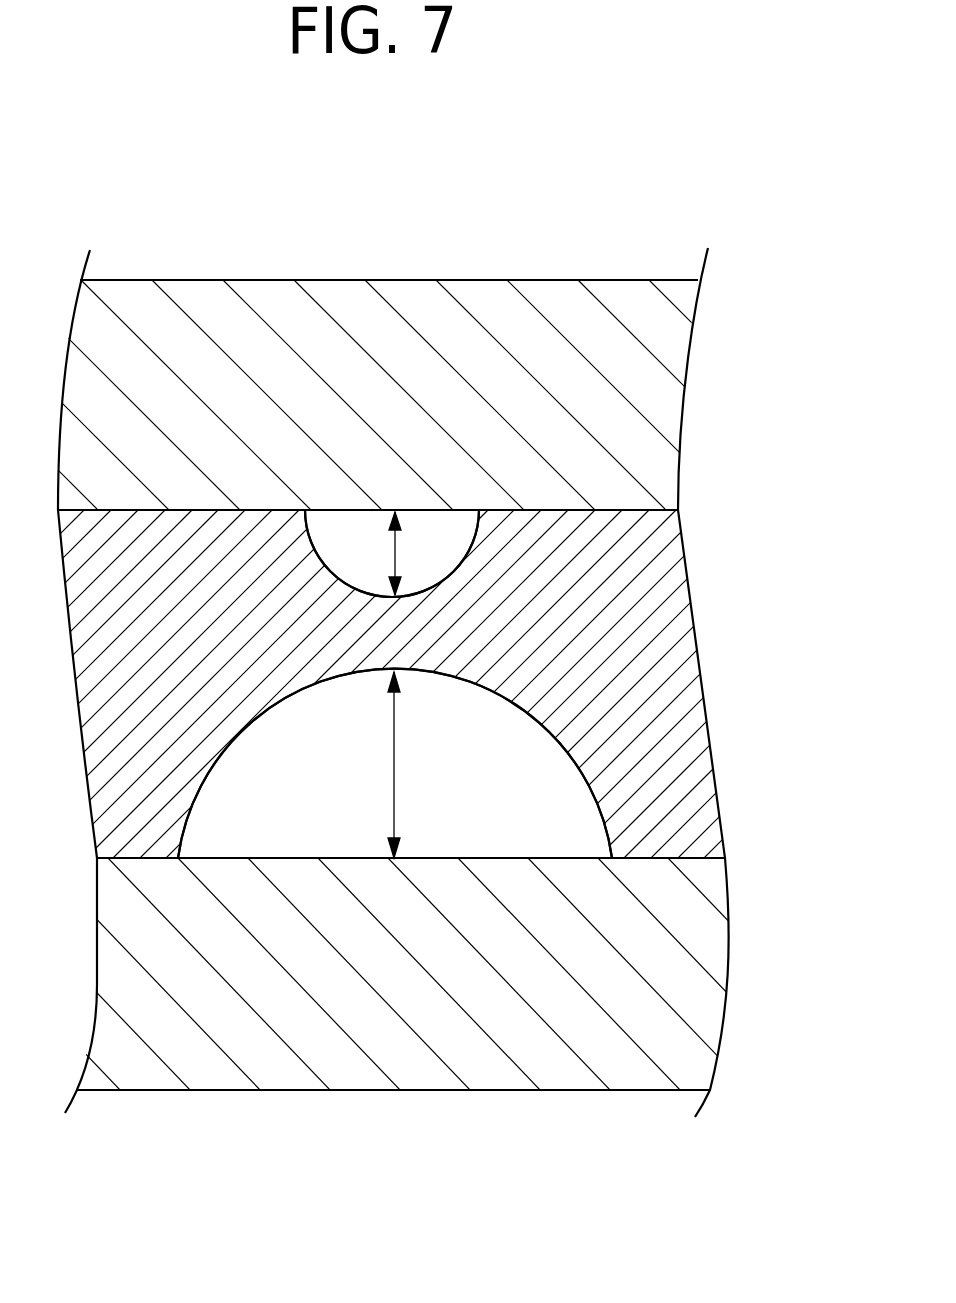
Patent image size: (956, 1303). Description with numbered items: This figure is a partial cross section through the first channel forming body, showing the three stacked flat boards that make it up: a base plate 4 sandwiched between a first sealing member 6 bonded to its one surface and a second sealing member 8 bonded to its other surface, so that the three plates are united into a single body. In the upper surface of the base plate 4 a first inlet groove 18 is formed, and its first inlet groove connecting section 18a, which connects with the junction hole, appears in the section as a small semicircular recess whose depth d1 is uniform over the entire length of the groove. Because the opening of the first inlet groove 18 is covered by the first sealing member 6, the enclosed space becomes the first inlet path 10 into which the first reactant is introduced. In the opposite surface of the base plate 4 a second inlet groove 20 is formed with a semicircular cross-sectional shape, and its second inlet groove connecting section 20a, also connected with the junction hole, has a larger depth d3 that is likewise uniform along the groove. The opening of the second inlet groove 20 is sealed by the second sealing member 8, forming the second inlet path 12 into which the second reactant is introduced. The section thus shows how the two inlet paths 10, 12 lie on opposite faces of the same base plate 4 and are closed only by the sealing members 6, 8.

The base plate 4 is at (637, 640).
The first sealing member 6 is at (655, 407).
The second sealing member 8 is at (690, 987).
The first inlet path 10 is at (368, 548).
The second inlet path 12 is at (483, 803).
The first inlet groove 18 is at (440, 400).
The first inlet groove connecting section 18a is at (453, 566).
The second inlet groove 20 is at (395, 932).
The second inlet groove connecting section 20a is at (207, 763).